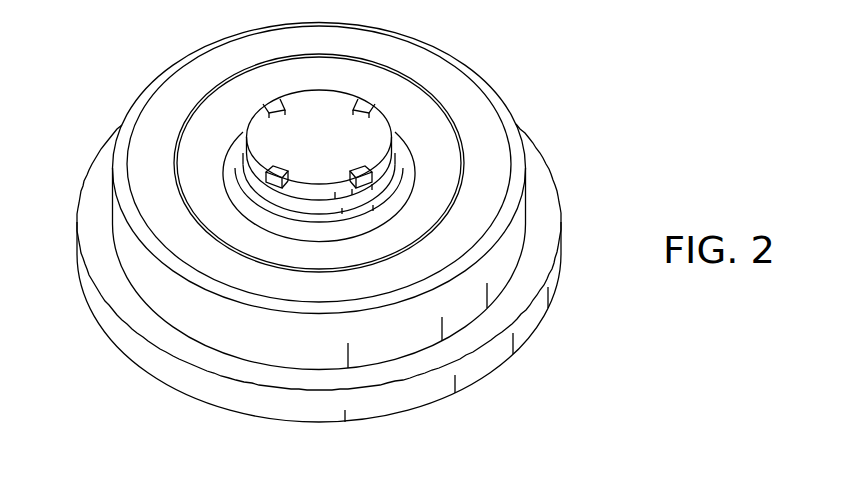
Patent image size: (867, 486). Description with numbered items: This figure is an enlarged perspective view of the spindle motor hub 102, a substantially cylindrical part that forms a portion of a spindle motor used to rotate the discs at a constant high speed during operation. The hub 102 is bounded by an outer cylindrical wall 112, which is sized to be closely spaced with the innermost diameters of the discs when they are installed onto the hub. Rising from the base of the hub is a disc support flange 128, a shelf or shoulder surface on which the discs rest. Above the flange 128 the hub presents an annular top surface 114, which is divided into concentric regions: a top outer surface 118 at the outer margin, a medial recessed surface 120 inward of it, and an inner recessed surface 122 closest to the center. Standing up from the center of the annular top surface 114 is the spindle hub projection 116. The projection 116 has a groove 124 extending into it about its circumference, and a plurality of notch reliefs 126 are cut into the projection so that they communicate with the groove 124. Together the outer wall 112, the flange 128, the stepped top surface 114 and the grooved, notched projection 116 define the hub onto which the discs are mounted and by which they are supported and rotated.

The spindle motor hub 102 is at (114, 28).
The outer cylindrical wall 112 is at (240, 330).
The annular top surface 114 is at (158, 114).
The spindle hub projection 116 is at (390, 130).
The top outer surface 118 is at (145, 178).
The medial recessed surface 120 is at (185, 200).
The inner recessed surface 122 is at (283, 228).
The groove 124 is at (384, 185).
The notch reliefs 126 is at (263, 100).
The disc support flange 128 is at (545, 232).